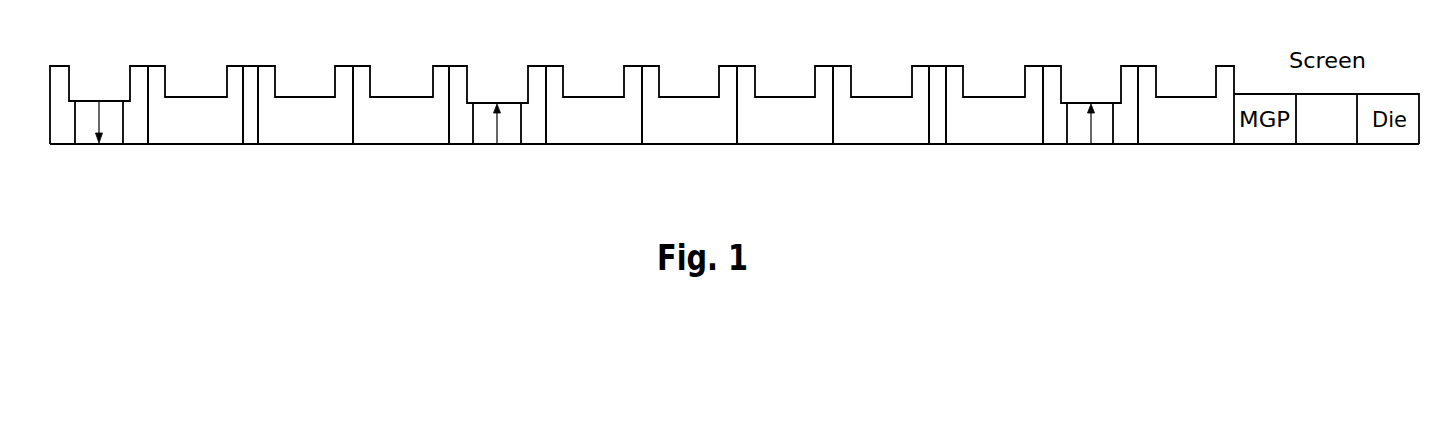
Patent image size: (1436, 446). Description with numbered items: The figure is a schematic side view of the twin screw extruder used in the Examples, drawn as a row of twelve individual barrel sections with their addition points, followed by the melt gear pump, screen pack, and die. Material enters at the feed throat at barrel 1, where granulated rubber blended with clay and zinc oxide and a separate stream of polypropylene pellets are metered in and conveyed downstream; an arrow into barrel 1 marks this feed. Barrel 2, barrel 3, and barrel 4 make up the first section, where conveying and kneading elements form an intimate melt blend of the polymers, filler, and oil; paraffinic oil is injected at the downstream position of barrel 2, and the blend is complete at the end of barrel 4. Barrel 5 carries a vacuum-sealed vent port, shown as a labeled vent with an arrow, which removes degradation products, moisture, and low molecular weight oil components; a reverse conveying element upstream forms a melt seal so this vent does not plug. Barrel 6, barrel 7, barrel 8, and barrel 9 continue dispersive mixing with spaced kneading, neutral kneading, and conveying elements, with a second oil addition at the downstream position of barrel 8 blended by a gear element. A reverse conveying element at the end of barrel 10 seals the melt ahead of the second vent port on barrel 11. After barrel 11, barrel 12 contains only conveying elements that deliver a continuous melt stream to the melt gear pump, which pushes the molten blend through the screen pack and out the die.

The barrel 1 is at (99, 81).
The barrel 2 is at (195, 81).
The barrel 3 is at (305, 81).
The barrel 4 is at (401, 81).
The barrel 5 is at (497, 81).
The barrel 6 is at (594, 81).
The barrel 7 is at (689, 81).
The barrel 8 is at (785, 81).
The barrel 9 is at (881, 81).
The barrel 10 is at (994, 81).
The barrel 11 is at (1090, 81).
The barrel 12 is at (1186, 81).